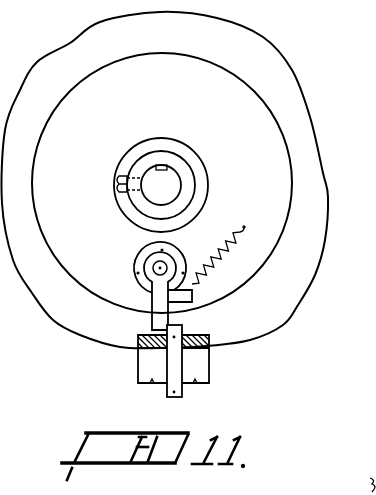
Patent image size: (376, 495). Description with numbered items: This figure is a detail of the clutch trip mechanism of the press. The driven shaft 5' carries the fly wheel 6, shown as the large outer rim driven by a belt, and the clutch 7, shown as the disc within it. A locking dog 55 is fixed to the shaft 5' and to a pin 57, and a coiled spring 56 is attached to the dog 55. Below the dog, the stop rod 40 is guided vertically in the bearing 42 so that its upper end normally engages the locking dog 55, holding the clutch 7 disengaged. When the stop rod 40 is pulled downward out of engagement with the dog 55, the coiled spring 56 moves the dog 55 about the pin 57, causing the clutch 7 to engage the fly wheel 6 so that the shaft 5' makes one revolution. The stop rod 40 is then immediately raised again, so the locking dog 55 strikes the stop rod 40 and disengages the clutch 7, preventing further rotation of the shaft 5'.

The fly wheel 6 is at (164, 180).
The clutch 7 is at (162, 183).
The shaft 5' is at (177, 179).
The locking dog 55 is at (155, 308).
The pin 57 is at (157, 266).
The coiled spring 56 is at (222, 259).
The bearing 42 is at (202, 335).
The stop rod 40 is at (175, 369).